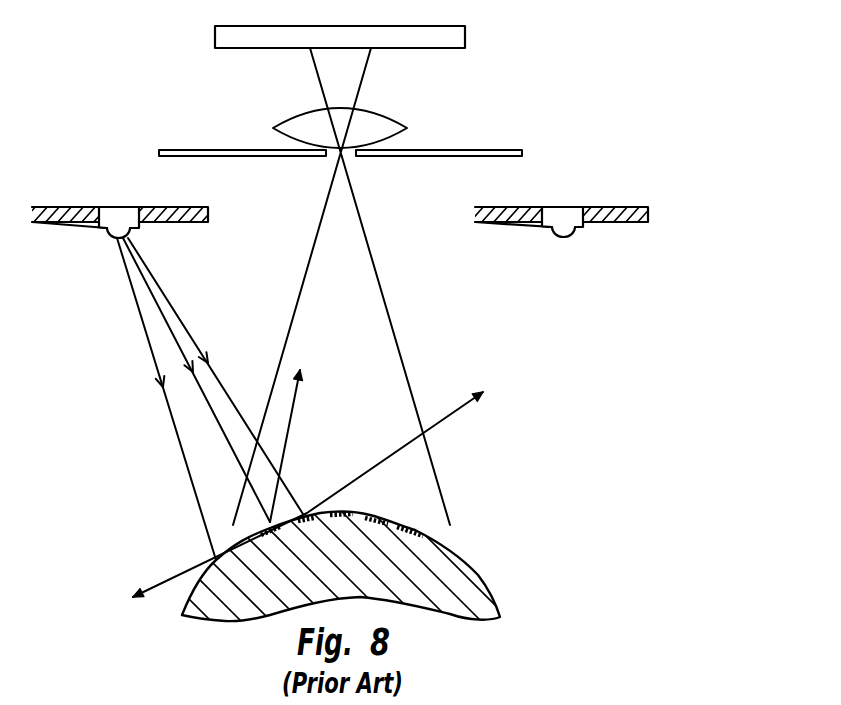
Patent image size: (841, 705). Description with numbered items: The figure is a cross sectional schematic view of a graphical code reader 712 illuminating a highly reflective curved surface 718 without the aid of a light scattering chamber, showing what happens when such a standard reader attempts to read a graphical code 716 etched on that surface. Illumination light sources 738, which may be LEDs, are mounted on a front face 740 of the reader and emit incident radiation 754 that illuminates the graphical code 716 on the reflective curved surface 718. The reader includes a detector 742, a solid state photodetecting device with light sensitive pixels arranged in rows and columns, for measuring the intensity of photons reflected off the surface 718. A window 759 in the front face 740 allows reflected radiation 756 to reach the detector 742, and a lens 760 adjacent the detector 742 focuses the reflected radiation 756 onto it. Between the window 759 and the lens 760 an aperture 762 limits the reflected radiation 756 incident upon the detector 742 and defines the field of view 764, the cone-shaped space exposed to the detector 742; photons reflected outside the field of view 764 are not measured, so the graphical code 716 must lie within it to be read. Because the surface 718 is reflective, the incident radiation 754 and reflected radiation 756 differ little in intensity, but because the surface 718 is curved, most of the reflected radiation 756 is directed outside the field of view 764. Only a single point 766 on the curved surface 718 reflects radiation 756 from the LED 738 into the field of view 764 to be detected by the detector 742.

The graphical code reader 712 is at (665, 154).
The graphical code 716 is at (420, 523).
The reflective curved surface 718 is at (482, 577).
The illumination light source 738 is at (110, 236).
The front face 740 is at (490, 222).
The detector 742 is at (465, 33).
The incident radiation 754 is at (178, 434).
The reflected radiation 756 is at (292, 418).
The window 759 is at (210, 208).
The lens 760 is at (385, 122).
The aperture 762 is at (352, 155).
The field of view 764 is at (397, 348).
The single point 766 is at (262, 527).